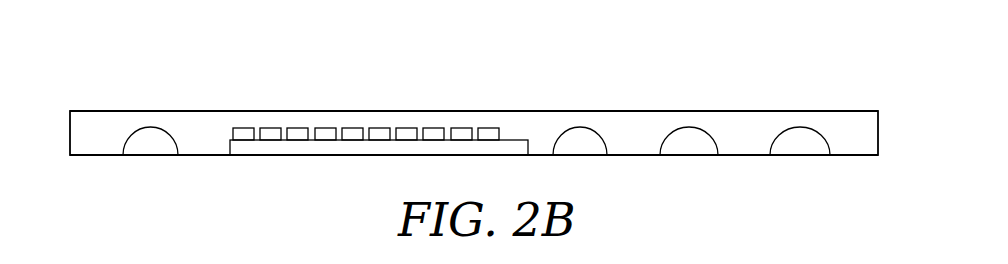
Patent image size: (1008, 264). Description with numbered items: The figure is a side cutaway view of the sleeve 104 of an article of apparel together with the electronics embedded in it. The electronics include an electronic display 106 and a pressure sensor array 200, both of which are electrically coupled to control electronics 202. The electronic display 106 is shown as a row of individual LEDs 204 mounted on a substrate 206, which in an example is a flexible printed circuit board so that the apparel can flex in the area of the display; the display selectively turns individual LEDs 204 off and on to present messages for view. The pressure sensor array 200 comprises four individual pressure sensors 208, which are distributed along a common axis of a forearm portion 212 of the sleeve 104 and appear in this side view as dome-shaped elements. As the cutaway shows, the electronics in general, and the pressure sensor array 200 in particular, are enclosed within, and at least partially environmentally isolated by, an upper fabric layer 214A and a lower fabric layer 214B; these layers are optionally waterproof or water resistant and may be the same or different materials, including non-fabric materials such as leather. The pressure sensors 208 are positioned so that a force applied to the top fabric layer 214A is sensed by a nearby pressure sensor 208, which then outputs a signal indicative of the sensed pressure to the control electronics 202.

The pressure sensor array 200 is at (590, 90).
The sleeve 104 is at (832, 111).
The upper fabric layer 214A is at (719, 111).
The lower fabric layer 214B is at (858, 155).
The pressure sensors 208 is at (145, 142).
The forearm portion 212 is at (172, 172).
The control electronics 202 is at (512, 150).
The LEDs 204 is at (380, 133).
The electronic display 106 is at (278, 152).
The substrate 206 is at (294, 150).